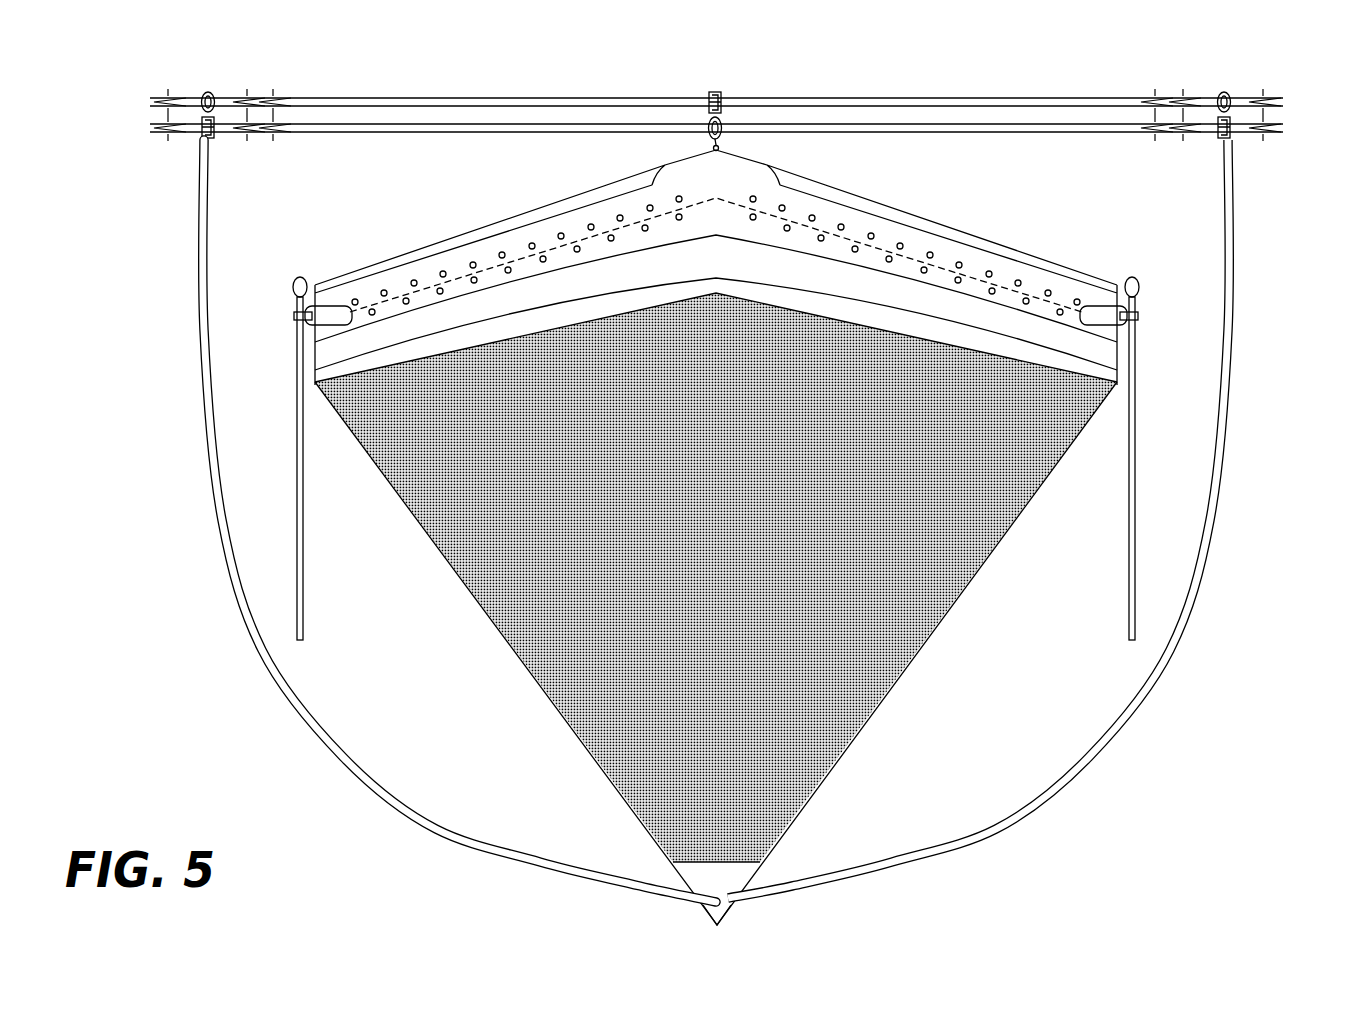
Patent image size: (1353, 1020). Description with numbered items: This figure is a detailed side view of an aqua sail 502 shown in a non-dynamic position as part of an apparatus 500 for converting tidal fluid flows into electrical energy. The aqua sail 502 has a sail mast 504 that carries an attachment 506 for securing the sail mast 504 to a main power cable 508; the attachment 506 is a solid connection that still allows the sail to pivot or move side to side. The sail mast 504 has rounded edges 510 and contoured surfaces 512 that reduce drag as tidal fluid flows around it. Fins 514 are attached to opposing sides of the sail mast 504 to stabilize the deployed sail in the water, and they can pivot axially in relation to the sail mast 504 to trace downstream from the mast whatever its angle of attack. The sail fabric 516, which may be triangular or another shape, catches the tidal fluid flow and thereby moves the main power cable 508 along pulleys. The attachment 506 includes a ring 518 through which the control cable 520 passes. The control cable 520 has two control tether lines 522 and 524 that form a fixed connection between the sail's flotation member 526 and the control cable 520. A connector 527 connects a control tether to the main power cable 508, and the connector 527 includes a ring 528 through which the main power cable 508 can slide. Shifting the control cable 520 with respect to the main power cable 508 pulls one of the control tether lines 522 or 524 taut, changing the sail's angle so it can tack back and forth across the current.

The apparatus 500 is at (737, 37).
The aqua sail 502 is at (998, 670).
The sail mast 504 is at (890, 228).
The attachment 506 is at (718, 145).
The main power cable 508 is at (497, 101).
The rounded edges 510 is at (450, 243).
The contoured surfaces 512 is at (615, 230).
The fins 514 is at (304, 561).
The sail fabric 516 is at (550, 655).
The ring 518 is at (712, 123).
The control cable 520 is at (1034, 133).
The control tether line 522 is at (928, 855).
The control tether line 524 is at (458, 826).
The flotation member 526 is at (740, 885).
The connector 527 is at (203, 122).
The ring 528 is at (203, 98).